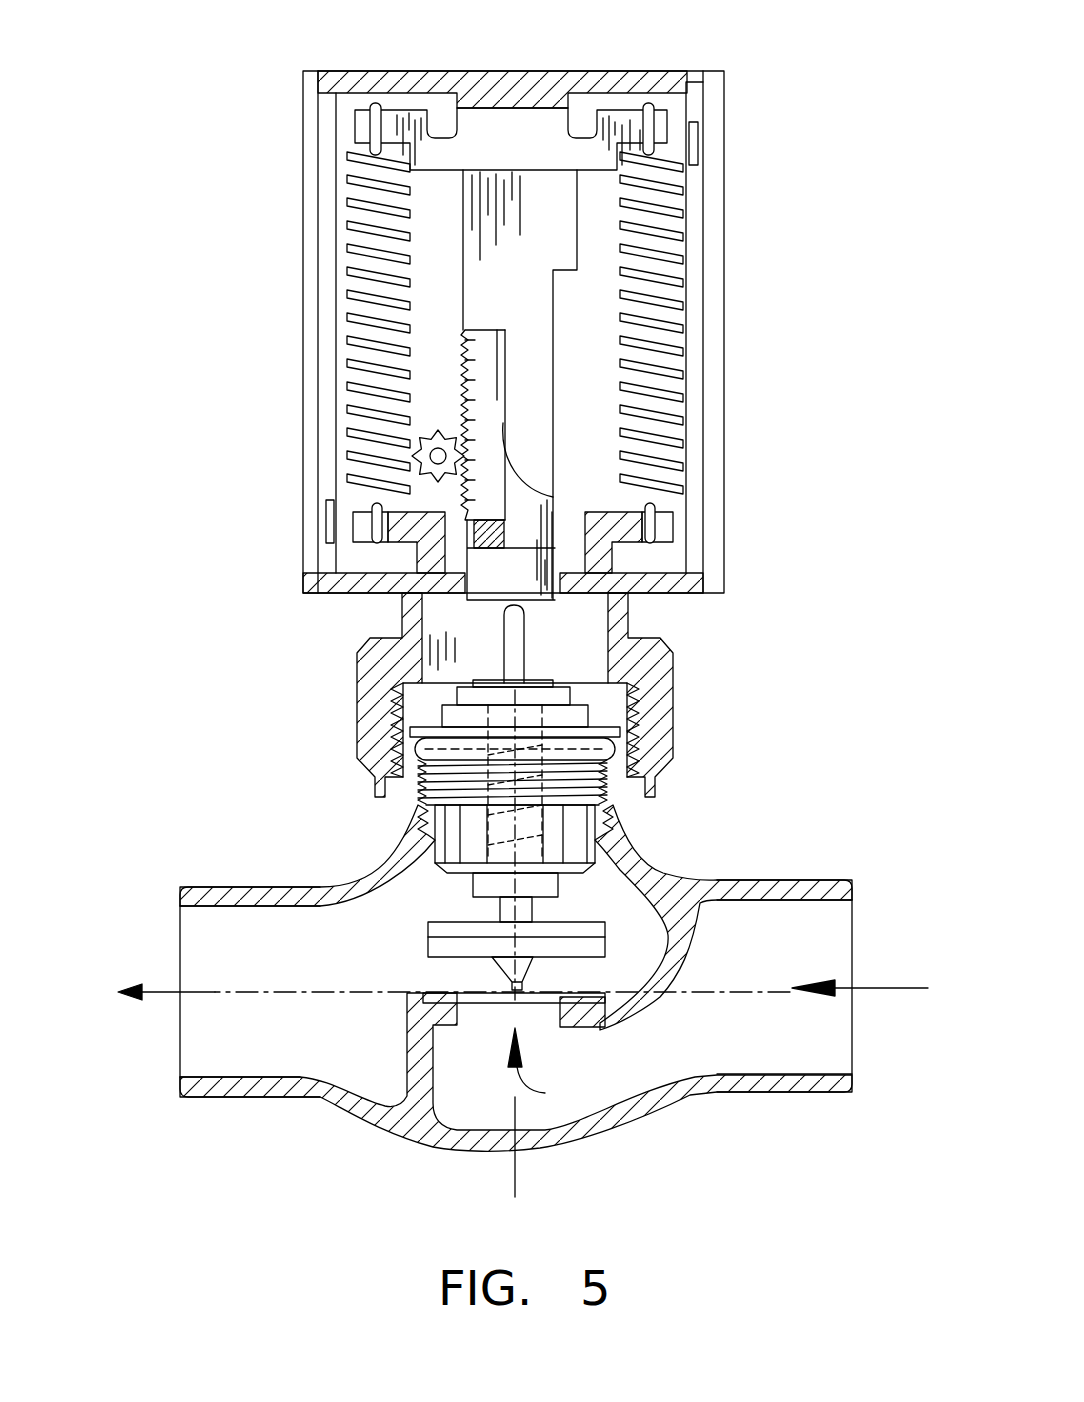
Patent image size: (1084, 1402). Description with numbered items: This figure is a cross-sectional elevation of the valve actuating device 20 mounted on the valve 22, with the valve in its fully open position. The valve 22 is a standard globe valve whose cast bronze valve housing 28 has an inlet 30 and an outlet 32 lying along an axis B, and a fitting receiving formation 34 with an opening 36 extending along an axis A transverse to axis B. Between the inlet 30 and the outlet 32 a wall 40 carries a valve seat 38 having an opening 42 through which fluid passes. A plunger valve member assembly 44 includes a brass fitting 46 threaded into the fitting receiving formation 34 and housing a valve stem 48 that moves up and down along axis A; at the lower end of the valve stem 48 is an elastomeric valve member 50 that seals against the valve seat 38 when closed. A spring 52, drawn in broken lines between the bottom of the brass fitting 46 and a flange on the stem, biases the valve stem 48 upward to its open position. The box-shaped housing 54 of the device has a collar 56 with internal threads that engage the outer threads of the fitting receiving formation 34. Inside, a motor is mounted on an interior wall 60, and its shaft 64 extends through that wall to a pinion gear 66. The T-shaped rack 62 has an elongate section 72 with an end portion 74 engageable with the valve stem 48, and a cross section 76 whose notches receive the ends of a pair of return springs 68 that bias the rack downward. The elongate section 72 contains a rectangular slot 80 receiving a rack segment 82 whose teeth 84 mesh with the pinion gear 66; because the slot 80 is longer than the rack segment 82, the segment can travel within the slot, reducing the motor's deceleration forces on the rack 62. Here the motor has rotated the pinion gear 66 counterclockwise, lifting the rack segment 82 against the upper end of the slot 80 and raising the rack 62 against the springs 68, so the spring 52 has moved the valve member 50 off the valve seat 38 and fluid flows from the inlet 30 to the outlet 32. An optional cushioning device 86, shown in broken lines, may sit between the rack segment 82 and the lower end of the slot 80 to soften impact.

The valve actuating device 20 is at (200, 308).
The valve 22 is at (200, 872).
The valve housing 28 is at (785, 872).
The inlet 30 is at (853, 1068).
The outlet 32 is at (268, 1077).
The fitting receiving formation 34 is at (615, 800).
The opening 36 is at (432, 866).
The valve seat 38 is at (433, 990).
The wall 40 is at (665, 1005).
The opening 42 is at (560, 1018).
The plunger valve member assembly 44 is at (340, 893).
The brass fitting 46 is at (600, 858).
The valve stem 48 is at (522, 660).
The valve member 50 is at (585, 943).
The spring 52 is at (415, 749).
The housing 54 is at (740, 210).
The collar 56 is at (357, 652).
The interior wall 60 is at (575, 393).
The rack 62 is at (448, 237).
The shaft 64 is at (412, 448).
The pinion gear 66 is at (372, 508).
The springs 68 is at (360, 185).
The elongate section 72 is at (525, 325).
The end portion 74 is at (620, 580).
The cross section 76 is at (517, 108).
The slot 80 is at (553, 497).
The rack segment 82 is at (462, 332).
The teeth 84 is at (460, 386).
The cushioning device 86 is at (475, 535).
The axis A is at (515, 1170).
The axis B is at (763, 990).